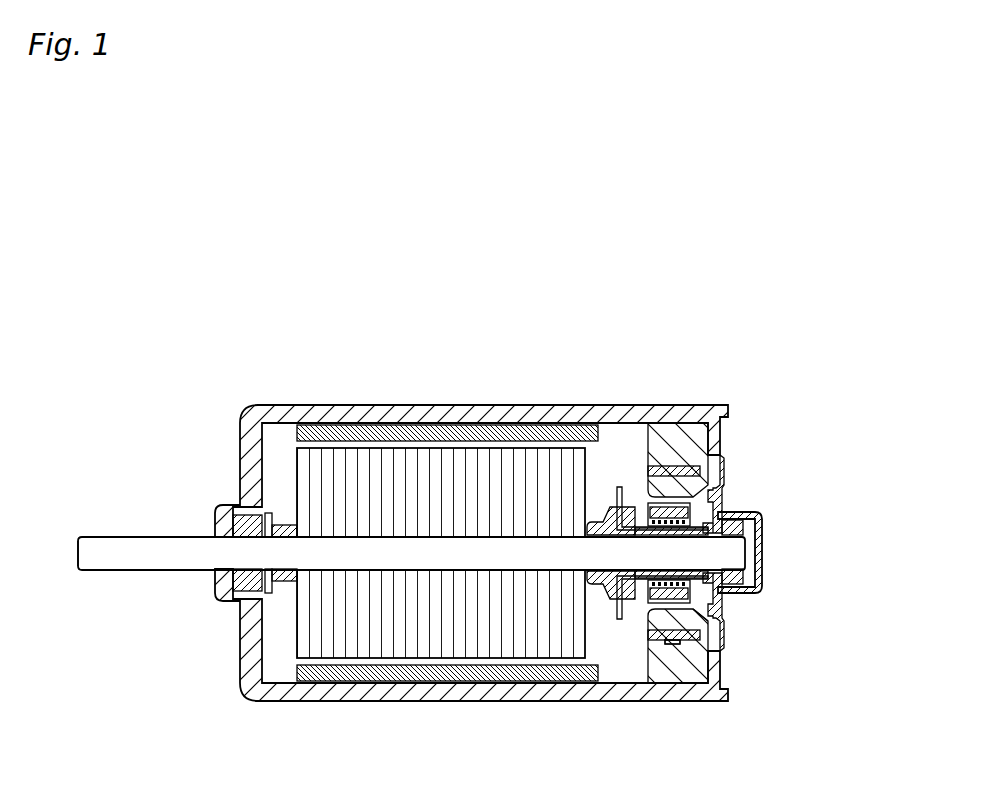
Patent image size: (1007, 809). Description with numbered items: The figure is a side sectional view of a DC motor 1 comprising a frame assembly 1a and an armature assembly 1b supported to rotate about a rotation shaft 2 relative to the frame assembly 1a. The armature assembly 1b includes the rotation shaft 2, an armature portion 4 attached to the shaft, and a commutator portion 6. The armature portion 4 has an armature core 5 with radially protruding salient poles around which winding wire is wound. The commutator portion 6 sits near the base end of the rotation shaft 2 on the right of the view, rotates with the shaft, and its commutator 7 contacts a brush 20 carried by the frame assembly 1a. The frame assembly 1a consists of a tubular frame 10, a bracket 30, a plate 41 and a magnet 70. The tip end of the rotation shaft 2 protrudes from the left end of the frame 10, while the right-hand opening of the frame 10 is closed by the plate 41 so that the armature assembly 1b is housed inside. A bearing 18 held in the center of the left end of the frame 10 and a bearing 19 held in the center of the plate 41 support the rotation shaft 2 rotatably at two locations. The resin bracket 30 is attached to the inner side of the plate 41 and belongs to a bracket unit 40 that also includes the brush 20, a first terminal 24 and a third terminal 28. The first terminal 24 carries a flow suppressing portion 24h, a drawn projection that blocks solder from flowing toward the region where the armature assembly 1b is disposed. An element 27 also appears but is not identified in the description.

The DC motor 1 is at (166, 198).
The frame assembly 1a is at (404, 392).
The armature assembly 1b is at (130, 584).
The rotation shaft 2 is at (160, 547).
The armature portion 4 is at (286, 455).
The armature core 5 is at (341, 467).
The commutator portion 6 is at (631, 612).
The commutator 7 is at (724, 606).
The frame 10 is at (389, 703).
The bearing 18 is at (236, 588).
The bearing 19 is at (762, 577).
The brush 20 is at (640, 577).
The first terminal 24 is at (648, 648).
The flow suppressing portion 24h is at (673, 645).
The terminal 27 is at (699, 634).
The third terminal 28 is at (667, 455).
The bracket 30 is at (685, 428).
The bracket unit 40 is at (738, 445).
The plate 41 is at (765, 514).
The magnet 70 is at (577, 416).